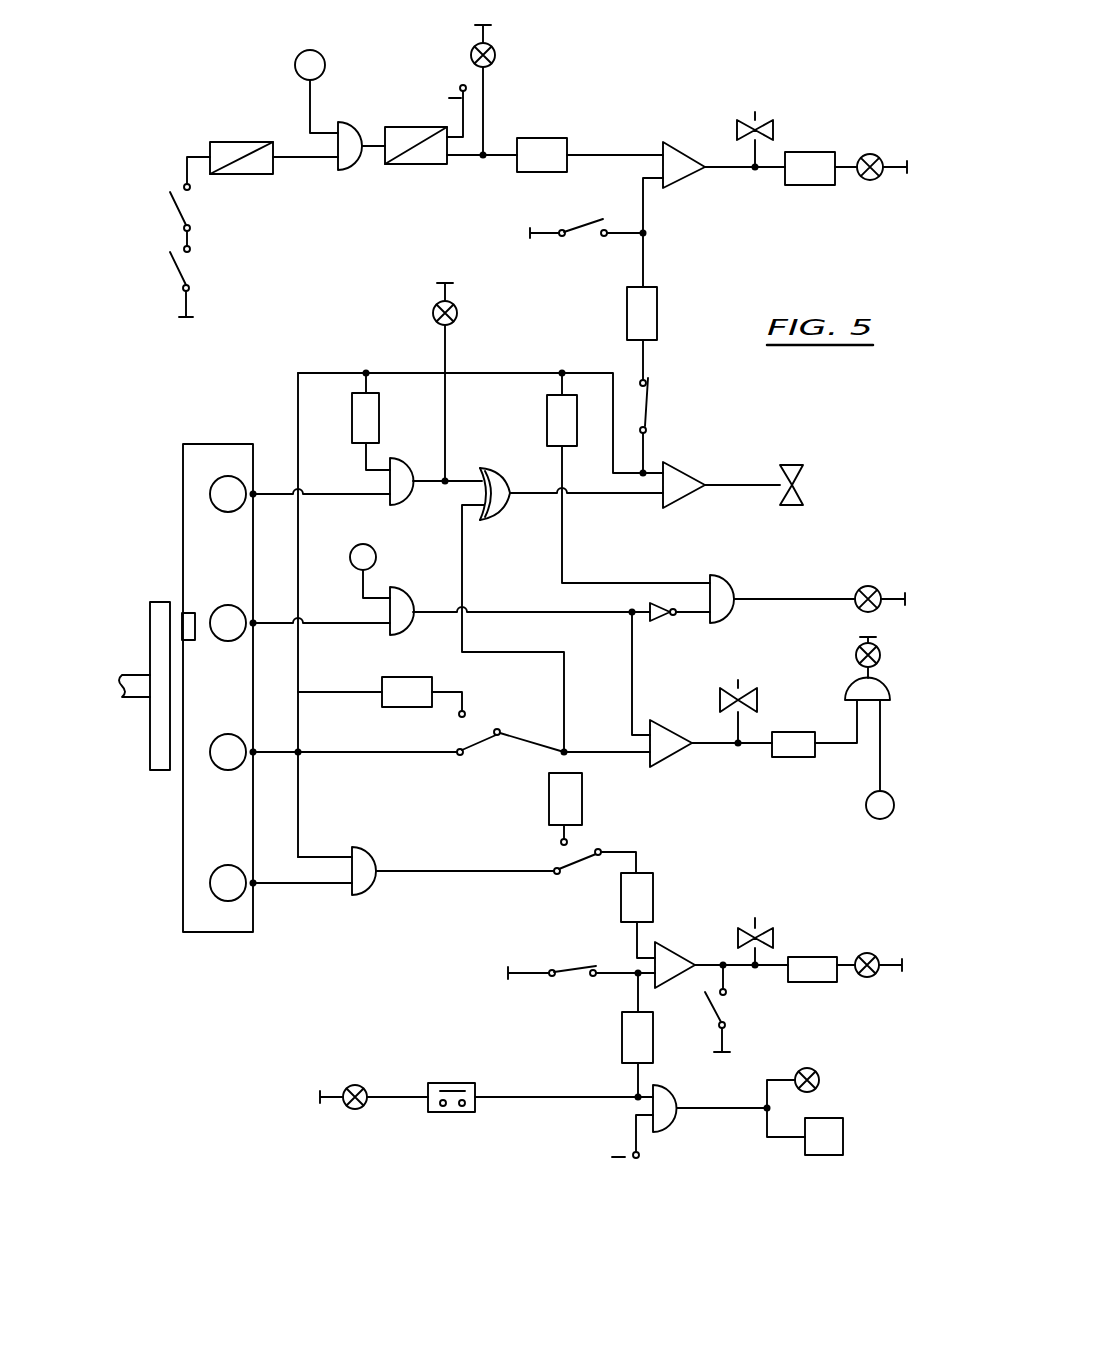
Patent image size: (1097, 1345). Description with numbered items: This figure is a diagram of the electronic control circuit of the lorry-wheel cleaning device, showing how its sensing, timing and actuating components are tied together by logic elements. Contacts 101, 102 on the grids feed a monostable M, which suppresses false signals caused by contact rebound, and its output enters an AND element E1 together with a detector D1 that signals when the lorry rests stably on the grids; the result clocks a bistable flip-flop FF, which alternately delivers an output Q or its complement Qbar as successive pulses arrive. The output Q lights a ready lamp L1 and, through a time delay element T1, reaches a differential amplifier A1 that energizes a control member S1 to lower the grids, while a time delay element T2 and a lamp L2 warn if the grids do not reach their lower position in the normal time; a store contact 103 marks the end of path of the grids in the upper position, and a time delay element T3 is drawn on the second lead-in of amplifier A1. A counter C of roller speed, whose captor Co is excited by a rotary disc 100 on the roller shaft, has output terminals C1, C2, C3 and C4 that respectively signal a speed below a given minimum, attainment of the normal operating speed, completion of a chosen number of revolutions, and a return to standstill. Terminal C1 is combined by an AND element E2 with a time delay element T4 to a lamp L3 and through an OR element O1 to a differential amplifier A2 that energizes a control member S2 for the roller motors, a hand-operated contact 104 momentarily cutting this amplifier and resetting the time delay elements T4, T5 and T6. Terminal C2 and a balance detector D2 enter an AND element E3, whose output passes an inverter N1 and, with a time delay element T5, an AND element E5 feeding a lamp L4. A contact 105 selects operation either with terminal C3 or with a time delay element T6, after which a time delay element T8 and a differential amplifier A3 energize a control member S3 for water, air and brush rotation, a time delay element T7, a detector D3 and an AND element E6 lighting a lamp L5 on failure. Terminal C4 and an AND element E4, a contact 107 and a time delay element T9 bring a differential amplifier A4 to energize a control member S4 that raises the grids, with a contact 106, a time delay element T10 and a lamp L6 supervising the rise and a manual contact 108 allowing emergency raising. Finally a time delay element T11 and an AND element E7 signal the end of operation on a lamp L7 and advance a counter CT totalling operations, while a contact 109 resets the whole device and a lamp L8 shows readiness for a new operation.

The rotary disc 100 is at (158, 618).
The contact 101 is at (175, 270).
The contact 102 is at (178, 208).
The store contact 103 is at (595, 218).
The hand-operated contact 104 is at (651, 413).
The selecting contact 105 is at (480, 740).
The contact 106 is at (575, 967).
The manual actuation contact 107 is at (585, 864).
The manual emergency contact 108 is at (720, 1012).
The reset contact 109 is at (453, 1113).
The monostable M is at (232, 120).
The bistable flip-flop FF is at (402, 129).
The AND element E1 is at (357, 172).
The AND element E2 is at (408, 474).
The AND element E3 is at (410, 605).
The AND element E4 is at (370, 866).
The AND element E5 is at (727, 597).
The AND element E6 is at (860, 688).
The AND element E7 is at (670, 1117).
The OR element O1 is at (494, 479).
The NO element N1 is at (655, 623).
The differential amplifier A1 is at (682, 152).
The differential amplifier A2 is at (683, 482).
The differential amplifier A3 is at (665, 744).
The differential amplifier A4 is at (690, 945).
The stability detector D1 is at (298, 58).
The balance detector D2 is at (355, 556).
The spraying and brush detector D3 is at (875, 811).
The ready lamp L1 is at (494, 60).
The warning lamp L2 is at (868, 154).
The warning lamp L3 is at (440, 301).
The warning lamp L4 is at (867, 587).
The warning lamp L5 is at (857, 657).
The warning lamp L6 is at (865, 956).
The end-of-operation lamp L7 is at (819, 1080).
The ready-for-new-operation lamp L8 is at (358, 1085).
The control member S1 is at (755, 122).
The control member S2 is at (800, 480).
The control member S3 is at (737, 690).
The control member S4 is at (755, 928).
The time delay element T1 is at (542, 155).
The time delay element T2 is at (810, 168).
The time delay element T3 is at (637, 305).
The time delay element T4 is at (360, 412).
The time delay element T5 is at (555, 412).
The time delay element T6 is at (407, 692).
The time delay element T7 is at (793, 744).
The time delay element T8 is at (555, 803).
The time delay element T9 is at (643, 895).
The time delay element T10 is at (812, 969).
The time delay element T11 is at (630, 1025).
The counter C is at (183, 493).
The output terminal C1 is at (233, 494).
The output terminal C2 is at (233, 623).
The output terminal C3 is at (233, 752).
The output terminal C4 is at (233, 883).
The captor Co is at (190, 616).
The operations counter CT is at (824, 1136).
The flip-flop output signal Q is at (456, 140).
The complementary flip-flop output signal Qbar is at (619, 1170).